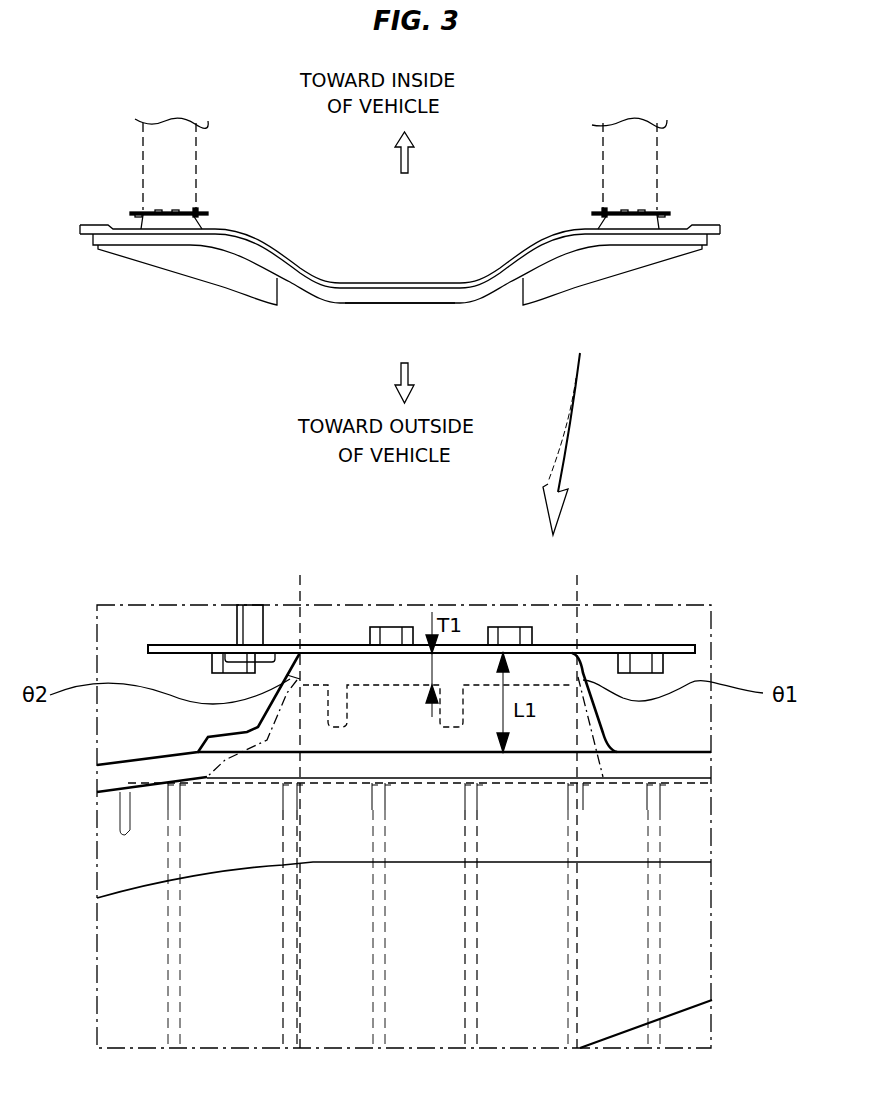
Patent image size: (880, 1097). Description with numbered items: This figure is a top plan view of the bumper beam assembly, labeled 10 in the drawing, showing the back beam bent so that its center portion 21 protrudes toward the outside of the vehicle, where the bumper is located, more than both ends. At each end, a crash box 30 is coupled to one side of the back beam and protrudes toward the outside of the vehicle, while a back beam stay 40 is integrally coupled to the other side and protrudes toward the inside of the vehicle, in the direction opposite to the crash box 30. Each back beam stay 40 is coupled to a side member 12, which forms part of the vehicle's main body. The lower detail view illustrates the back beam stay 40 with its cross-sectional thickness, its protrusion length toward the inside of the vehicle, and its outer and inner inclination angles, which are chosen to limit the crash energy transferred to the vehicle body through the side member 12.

The bumper beam 10 is at (486, 247).
The side member 12 is at (158, 152).
The center portion 21 is at (362, 297).
The crash boxes 30 is at (188, 267).
The back beam stays 40 is at (163, 220).